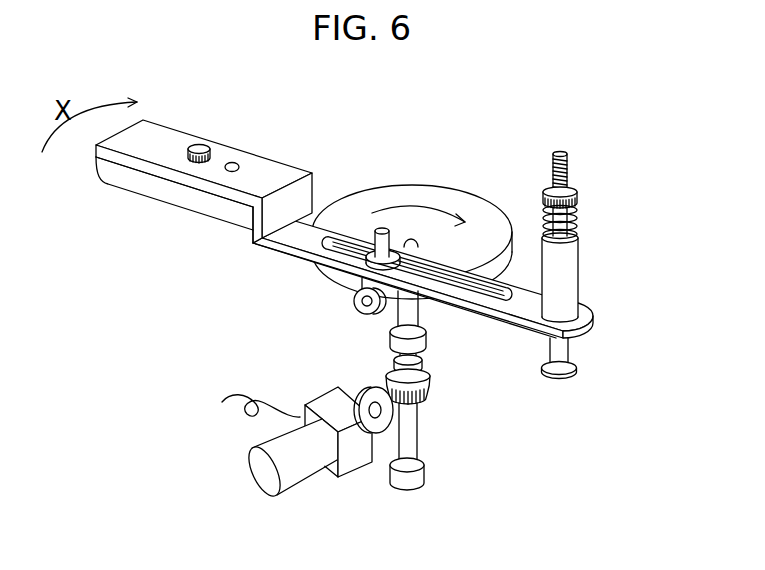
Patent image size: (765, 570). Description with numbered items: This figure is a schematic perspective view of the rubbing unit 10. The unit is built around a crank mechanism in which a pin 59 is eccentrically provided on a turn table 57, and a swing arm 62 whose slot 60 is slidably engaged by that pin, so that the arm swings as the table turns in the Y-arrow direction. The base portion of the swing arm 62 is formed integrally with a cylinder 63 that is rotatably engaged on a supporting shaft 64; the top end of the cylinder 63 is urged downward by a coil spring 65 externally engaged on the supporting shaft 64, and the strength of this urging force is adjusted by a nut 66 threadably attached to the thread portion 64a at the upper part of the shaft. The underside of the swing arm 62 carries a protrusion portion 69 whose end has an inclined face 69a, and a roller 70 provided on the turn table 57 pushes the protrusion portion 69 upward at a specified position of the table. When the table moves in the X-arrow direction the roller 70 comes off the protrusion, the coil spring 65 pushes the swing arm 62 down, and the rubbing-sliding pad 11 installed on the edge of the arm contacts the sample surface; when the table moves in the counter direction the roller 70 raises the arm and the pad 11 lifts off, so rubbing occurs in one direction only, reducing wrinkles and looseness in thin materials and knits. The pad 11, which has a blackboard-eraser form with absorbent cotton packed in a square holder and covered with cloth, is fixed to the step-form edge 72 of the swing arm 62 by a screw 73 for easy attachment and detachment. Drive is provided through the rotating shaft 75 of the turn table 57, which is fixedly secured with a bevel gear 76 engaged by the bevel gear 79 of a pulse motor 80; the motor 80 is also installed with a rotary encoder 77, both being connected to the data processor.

The rubbing unit 10 is at (433, 167).
The rubbing-sliding pad 11 is at (131, 182).
The turn table 57 is at (468, 203).
The pin 59 is at (380, 230).
The slot 60 is at (293, 247).
The swing arm 62 is at (520, 318).
The cylinder 63 is at (574, 270).
The supporting shaft 64 is at (570, 347).
The thread portion 64a is at (570, 160).
The coil spring 65 is at (578, 216).
The nut 66 is at (574, 190).
The protrusion portion 69 is at (463, 320).
The inclined face 69a is at (327, 283).
The roller 70 is at (357, 303).
The step-form edge 72 is at (260, 163).
The screw 73 is at (204, 150).
The rotating shaft 75 is at (395, 318).
The bevel gear 76 is at (424, 392).
The rotary encoder 77 is at (305, 485).
The bevel gear 79 is at (378, 434).
The pulse motor 80 is at (348, 460).